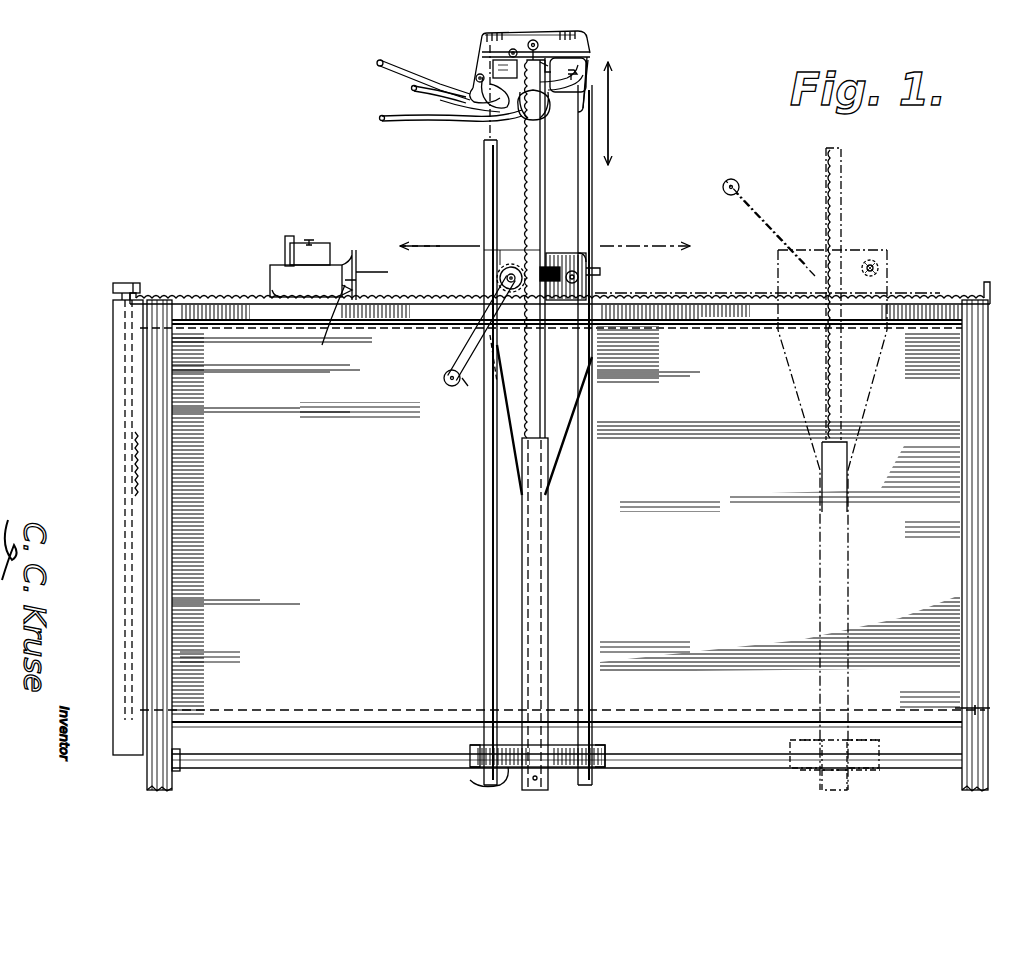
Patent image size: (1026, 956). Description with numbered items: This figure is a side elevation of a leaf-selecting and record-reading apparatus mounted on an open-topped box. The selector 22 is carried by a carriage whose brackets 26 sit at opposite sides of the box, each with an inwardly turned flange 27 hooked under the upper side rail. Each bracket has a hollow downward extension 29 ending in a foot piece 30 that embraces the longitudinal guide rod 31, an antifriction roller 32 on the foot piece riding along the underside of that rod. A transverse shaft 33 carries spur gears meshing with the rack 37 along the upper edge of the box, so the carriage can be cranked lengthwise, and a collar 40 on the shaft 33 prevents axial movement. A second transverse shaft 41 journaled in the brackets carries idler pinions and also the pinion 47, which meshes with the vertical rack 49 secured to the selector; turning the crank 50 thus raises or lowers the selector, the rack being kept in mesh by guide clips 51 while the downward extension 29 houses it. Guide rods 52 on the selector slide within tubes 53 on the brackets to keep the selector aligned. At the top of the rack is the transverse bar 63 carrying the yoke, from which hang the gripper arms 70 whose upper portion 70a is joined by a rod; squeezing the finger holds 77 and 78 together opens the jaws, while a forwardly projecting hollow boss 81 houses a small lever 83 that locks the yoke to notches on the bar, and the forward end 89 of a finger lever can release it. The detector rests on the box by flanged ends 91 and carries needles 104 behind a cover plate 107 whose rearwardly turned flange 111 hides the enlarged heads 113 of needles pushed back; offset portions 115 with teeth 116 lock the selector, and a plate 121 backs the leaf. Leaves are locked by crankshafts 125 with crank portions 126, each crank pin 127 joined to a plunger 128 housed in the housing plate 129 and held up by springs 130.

The selector 22 is at (596, 45).
The brackets 26 is at (545, 388).
The inwardly turned flange 27 is at (496, 385).
The downward extension 29 is at (545, 540).
The foot piece 30 is at (470, 782).
The longitudinal guide rod 31 is at (692, 760).
The antifriction roller 32 is at (548, 790).
The shaft 33 is at (600, 290).
The rack 37 is at (180, 298).
The collar 40 is at (575, 280).
The second transverse shaft 41 is at (512, 247).
The pinion 47 is at (496, 276).
The vertical rack 49 is at (530, 240).
The crank 50 is at (470, 340).
The guide clips 51 is at (575, 255).
The guide rods 52 is at (484, 190).
The tubes 53 is at (484, 577).
The transverse bar 63 is at (540, 60).
The gripper arms 70 is at (572, 165).
The upper portion of gripper arm 70a is at (643, 90).
The finger hold 77 is at (380, 116).
The finger hold 78 is at (378, 60).
The hollow boss 81 is at (505, 60).
The small lever 83 is at (487, 118).
The forward end of finger lever 89 is at (412, 88).
The flanged ends 91 is at (270, 282).
The needles 104 is at (373, 270).
The cover plate 107 is at (290, 253).
The rearwardly turned flange 111 is at (290, 236).
The enlarged head 113 is at (312, 240).
The offset portions 115 is at (360, 255).
The teeth 116 is at (328, 325).
The plate 121 is at (602, 270).
The crankshafts 125 is at (972, 705).
The crank portions 126 is at (296, 710).
The crank pin 127 is at (160, 670).
The plunger 128 is at (120, 283).
The housing plate 129 is at (113, 345).
The springs 130 is at (132, 458).